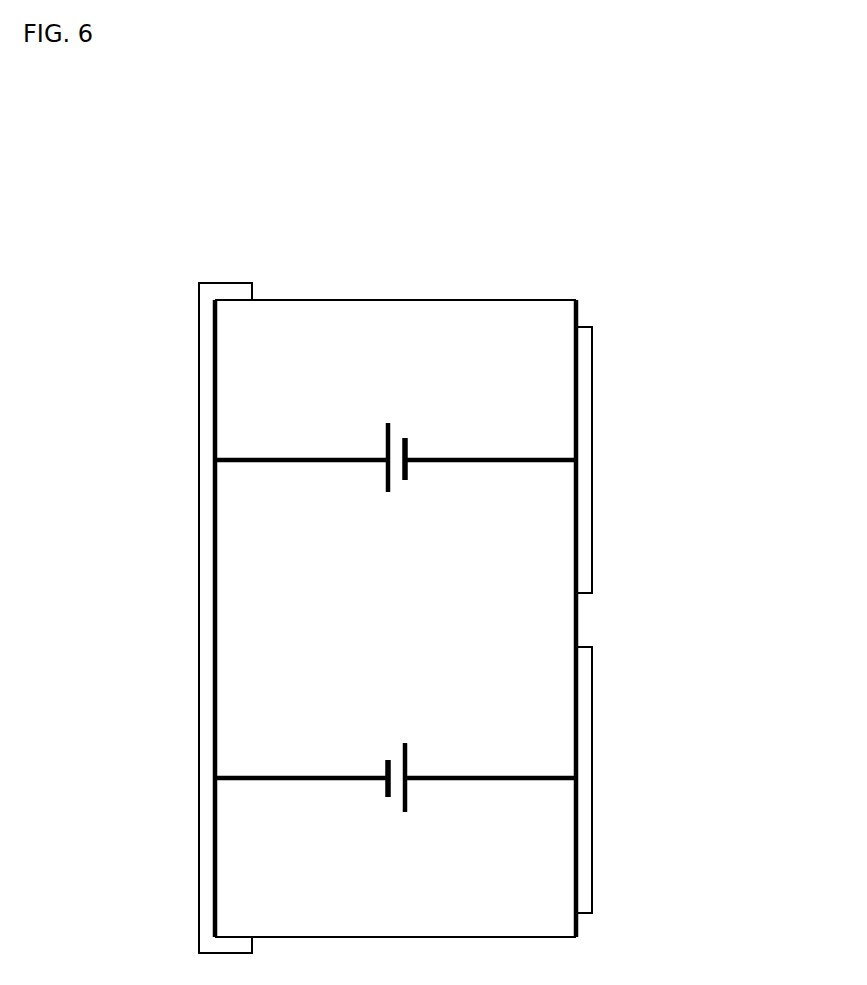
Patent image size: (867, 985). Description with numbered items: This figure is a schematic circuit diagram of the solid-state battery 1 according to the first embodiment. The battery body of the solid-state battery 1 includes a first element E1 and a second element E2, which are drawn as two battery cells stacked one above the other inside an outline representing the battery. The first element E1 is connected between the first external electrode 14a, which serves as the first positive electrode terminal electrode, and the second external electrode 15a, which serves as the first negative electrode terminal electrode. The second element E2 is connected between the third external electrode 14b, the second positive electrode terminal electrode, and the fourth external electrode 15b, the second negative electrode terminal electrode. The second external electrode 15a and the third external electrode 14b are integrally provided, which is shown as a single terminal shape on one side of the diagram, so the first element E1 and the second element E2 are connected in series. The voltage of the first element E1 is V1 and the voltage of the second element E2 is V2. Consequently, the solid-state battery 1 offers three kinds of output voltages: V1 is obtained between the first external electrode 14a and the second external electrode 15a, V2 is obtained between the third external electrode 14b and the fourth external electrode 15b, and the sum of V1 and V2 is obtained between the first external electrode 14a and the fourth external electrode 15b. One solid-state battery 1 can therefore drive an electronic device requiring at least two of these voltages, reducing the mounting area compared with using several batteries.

The solid-state battery 1 is at (575, 212).
The first external electrode 14a is at (592, 780).
The third external electrode 14b is at (200, 462).
The second external electrode 15a is at (200, 800).
The fourth external electrode 15b is at (592, 474).
The first element E1 is at (406, 762).
The second element E2 is at (406, 448).
The voltage of the first element V1 is at (395, 799).
The voltage of the second element V2 is at (395, 476).